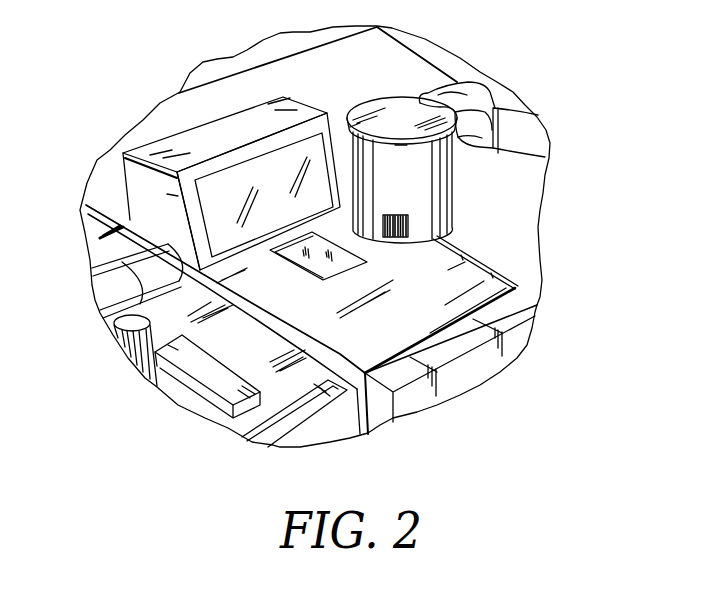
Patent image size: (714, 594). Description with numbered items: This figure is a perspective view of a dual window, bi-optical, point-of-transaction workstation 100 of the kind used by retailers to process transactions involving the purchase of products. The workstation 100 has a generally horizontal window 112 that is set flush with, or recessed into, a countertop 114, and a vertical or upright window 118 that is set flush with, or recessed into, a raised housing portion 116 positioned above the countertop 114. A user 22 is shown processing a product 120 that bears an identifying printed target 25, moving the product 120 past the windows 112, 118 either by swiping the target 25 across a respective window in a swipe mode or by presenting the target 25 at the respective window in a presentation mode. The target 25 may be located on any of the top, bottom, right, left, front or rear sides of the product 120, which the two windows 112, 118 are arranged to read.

The user 22 is at (534, 138).
The printed target 25 is at (408, 232).
The point-of-transaction workstation 100 is at (528, 303).
The horizontal window 112 is at (314, 267).
The countertop 114 is at (428, 310).
The raised housing portion 116 is at (129, 175).
The vertical window 118 is at (262, 178).
The product 120 is at (403, 106).